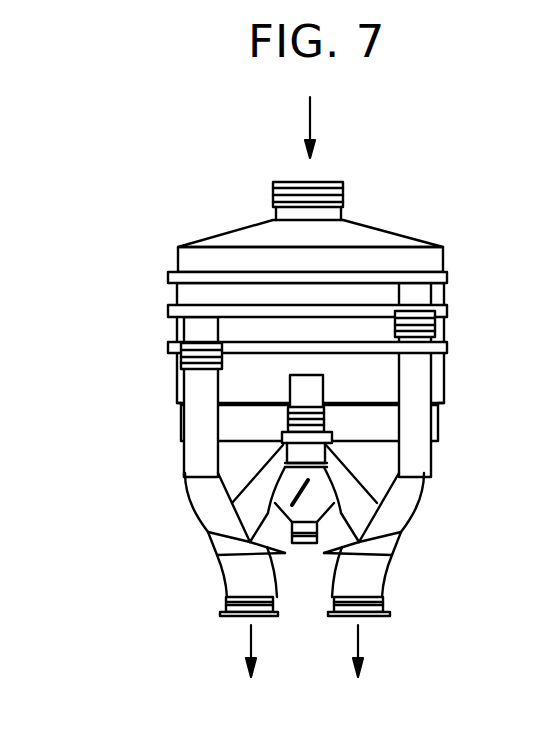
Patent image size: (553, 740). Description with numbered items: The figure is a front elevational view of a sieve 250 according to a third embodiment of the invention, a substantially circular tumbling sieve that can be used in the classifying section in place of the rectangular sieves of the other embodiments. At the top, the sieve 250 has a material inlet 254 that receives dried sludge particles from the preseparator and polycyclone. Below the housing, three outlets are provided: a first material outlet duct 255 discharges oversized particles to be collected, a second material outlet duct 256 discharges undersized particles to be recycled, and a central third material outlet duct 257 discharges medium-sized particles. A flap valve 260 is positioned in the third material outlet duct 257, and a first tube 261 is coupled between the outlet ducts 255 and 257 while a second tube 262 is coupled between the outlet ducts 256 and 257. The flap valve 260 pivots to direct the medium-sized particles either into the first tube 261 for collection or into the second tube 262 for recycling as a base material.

The sieve 250 is at (226, 200).
The material inlet 254 is at (337, 182).
The first material outlet duct 255 is at (182, 418).
The second material outlet duct 256 is at (447, 370).
The third material outlet duct 257 is at (323, 389).
The flap valve 260 is at (294, 500).
The first tube 261 is at (262, 525).
The second tube 262 is at (357, 522).